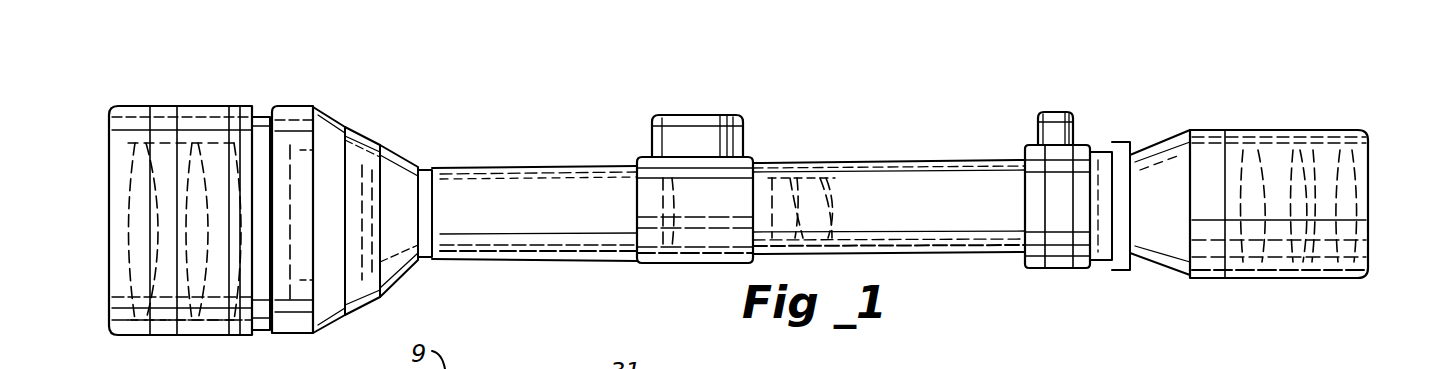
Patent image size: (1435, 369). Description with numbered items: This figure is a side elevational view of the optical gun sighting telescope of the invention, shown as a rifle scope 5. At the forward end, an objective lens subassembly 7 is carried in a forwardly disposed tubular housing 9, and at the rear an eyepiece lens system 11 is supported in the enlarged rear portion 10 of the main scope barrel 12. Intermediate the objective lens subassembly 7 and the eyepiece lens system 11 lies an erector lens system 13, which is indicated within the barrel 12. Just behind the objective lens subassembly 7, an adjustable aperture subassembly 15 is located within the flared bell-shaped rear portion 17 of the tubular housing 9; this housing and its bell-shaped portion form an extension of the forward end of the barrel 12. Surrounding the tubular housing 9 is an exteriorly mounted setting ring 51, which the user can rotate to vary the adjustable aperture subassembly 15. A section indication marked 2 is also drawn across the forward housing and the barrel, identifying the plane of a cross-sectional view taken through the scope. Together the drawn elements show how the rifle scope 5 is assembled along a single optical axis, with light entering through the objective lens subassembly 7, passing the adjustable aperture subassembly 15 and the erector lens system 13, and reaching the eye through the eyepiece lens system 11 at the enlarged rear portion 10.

The section line 2- 2 is at (160, 215).
The rifle scope 5 is at (899, 125).
The objective lens subassembly 7 is at (126, 226).
The tubular housing 9 is at (253, 118).
The enlarged rear portion 10 is at (1270, 128).
The eyepiece lens system 11 is at (1357, 205).
The main scope barrel 12 is at (983, 160).
The erector lens system 13 is at (838, 193).
The adjustable aperture subassembly 15 is at (366, 202).
The flared bell-shaped rear portion 17 is at (420, 166).
The setting ring 51 is at (316, 108).